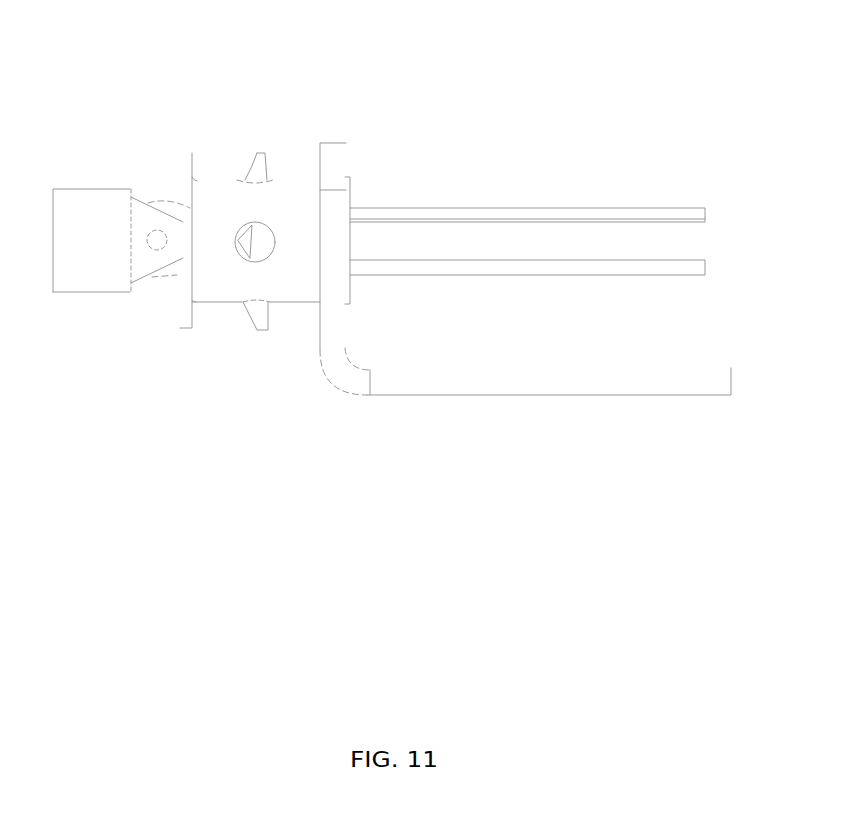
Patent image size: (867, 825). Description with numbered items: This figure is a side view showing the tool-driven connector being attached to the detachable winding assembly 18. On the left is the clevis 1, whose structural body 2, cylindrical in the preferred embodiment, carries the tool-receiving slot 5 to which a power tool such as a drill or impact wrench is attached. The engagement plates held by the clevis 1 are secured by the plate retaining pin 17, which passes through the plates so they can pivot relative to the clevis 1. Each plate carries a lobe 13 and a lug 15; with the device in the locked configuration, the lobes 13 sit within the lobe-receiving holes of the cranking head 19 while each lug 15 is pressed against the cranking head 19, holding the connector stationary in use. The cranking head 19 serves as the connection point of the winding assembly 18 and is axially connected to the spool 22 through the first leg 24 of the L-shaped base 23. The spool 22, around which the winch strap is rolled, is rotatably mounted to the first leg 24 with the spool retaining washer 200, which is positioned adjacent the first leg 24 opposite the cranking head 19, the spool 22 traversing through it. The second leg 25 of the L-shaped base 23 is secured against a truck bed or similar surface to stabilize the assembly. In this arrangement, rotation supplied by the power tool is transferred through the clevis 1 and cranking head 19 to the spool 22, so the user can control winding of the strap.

The clevis 1 is at (105, 276).
The structural body 2 is at (88, 292).
The tool-receiving slot 5 is at (45, 254).
The lobe 13 is at (258, 152).
The lug 15 is at (185, 150).
The plate retaining pin 17 is at (147, 241).
The detachable winding assembly 18 is at (580, 93).
The cranking head 19 is at (291, 302).
The spool 22 is at (636, 279).
The L-shaped base 23 is at (622, 414).
The first leg 24 is at (337, 150).
The second leg 25 is at (530, 388).
The spool retaining washer 200 is at (349, 184).